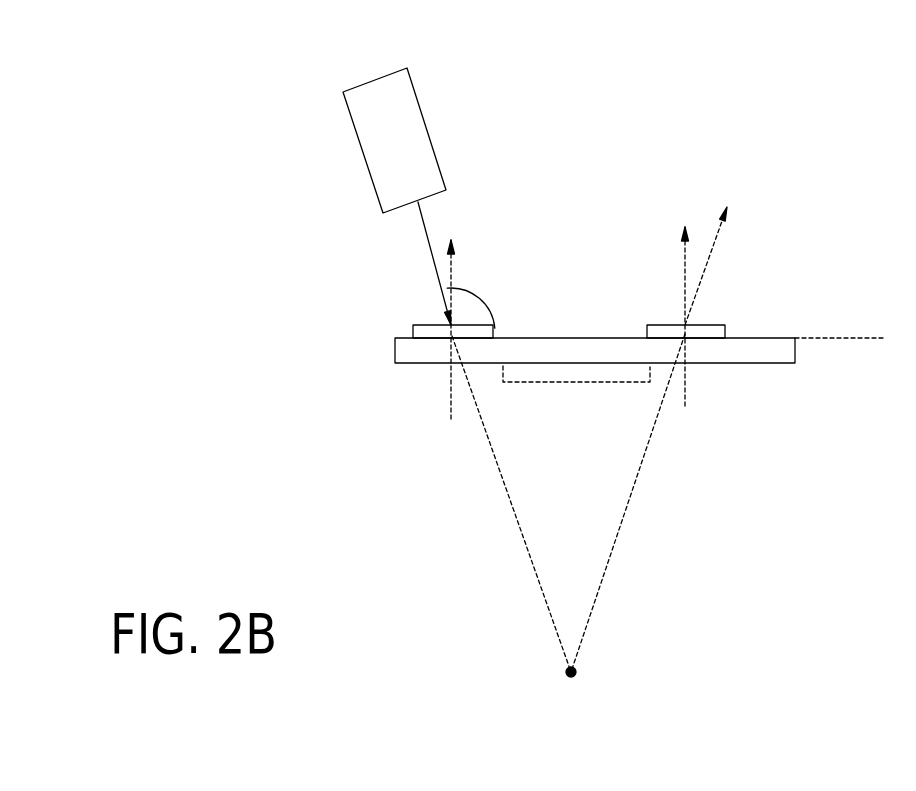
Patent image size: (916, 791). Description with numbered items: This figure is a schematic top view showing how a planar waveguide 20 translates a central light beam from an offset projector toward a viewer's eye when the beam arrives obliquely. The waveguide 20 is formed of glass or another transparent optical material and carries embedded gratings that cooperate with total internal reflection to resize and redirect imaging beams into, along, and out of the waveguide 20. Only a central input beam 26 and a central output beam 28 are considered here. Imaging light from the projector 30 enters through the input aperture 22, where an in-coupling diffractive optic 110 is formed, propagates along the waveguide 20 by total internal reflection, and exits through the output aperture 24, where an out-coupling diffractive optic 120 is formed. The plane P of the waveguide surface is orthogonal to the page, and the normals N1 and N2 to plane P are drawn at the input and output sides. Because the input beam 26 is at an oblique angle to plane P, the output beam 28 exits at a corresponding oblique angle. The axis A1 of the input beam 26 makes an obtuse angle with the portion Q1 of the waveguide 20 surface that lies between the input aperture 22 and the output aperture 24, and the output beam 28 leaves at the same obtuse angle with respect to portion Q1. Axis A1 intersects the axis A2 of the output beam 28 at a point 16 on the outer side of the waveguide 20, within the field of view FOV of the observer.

The light source 30 is at (353, 122).
The in-coupling diffractive optic 110 is at (373, 259).
The out-coupling diffractive optic 120 is at (755, 263).
The input beam 26 is at (430, 248).
The input aperture 22 is at (420, 324).
The output aperture 24 is at (725, 324).
The waveguide 20 is at (395, 346).
The output beam 28 is at (713, 250).
The normal N1 is at (450, 405).
The normal N2 is at (687, 391).
The plane P is at (858, 338).
The portion Q1 is at (580, 383).
The axis A1 is at (537, 572).
The axis A2 is at (605, 575).
The point 16 is at (576, 676).
The field of view FOV is at (500, 684).